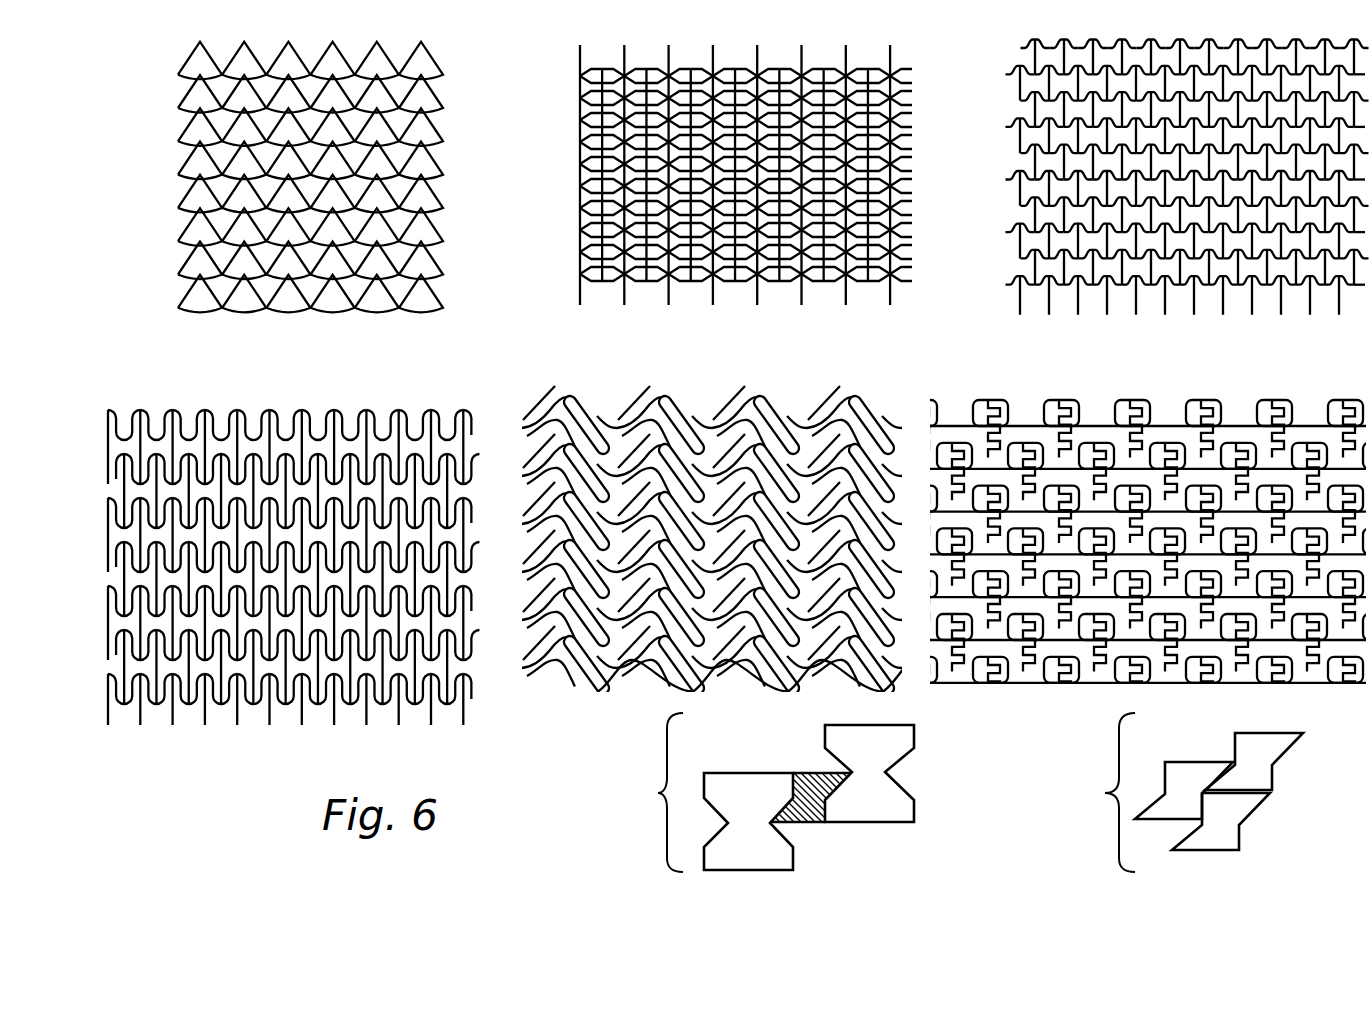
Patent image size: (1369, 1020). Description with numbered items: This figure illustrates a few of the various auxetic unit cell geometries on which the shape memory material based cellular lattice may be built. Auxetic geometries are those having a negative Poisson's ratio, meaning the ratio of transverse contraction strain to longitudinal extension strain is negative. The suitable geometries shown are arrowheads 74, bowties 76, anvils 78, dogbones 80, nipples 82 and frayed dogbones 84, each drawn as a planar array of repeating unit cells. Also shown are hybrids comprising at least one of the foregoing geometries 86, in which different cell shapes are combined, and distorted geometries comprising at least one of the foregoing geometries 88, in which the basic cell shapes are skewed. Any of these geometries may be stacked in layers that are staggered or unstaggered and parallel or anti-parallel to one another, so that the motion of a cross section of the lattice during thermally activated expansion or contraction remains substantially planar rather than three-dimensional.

The arrowheads 74 is at (183, 130).
The bowties 76 is at (580, 119).
The anvils 78 is at (1012, 121).
The dogbones 80 is at (266, 407).
The nipples 82 is at (735, 405).
The frayed dogbones 84 is at (1150, 400).
The hybrids comprising at least one of the foregoing geometries 86 is at (642, 793).
The distorted geometries comprising at least one of the foregoing geometries 88 is at (1090, 792).